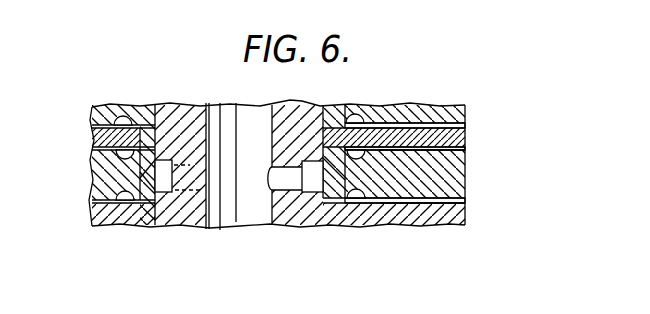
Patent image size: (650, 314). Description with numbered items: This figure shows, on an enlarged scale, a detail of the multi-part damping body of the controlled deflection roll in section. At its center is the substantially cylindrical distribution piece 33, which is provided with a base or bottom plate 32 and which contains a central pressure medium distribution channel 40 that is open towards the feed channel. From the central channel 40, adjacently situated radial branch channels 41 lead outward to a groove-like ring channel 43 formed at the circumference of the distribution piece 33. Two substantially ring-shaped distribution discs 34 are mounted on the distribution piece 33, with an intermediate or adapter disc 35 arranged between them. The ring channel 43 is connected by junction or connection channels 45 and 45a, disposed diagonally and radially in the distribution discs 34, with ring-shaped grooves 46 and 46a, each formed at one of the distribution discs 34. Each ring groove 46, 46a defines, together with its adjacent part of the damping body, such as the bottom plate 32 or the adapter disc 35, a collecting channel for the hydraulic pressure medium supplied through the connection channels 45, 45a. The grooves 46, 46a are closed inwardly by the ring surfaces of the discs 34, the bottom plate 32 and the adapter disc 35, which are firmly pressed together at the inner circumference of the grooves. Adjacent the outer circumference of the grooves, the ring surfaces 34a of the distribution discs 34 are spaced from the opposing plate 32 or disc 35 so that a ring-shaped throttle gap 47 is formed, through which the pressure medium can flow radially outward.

The base or bottom plate 32 is at (457, 220).
The cylindrical distribution piece 33 is at (191, 113).
The ring-shaped distribution disc 34 is at (455, 110).
The ring surface of the distribution disc 34a is at (455, 155).
The intermediate or adapter disc 35 is at (467, 138).
The central pressure medium distribution channel 40 is at (245, 218).
The radial branch channel 41 is at (270, 186).
The ring channel 43 is at (314, 188).
The junction or connection channel 45 is at (340, 205).
The junction or connection channel 45a is at (145, 203).
The ring-shaped groove 46 is at (392, 110).
The ring-shaped groove 46a is at (360, 110).
The ring-shaped throttle gap 47 is at (468, 124).